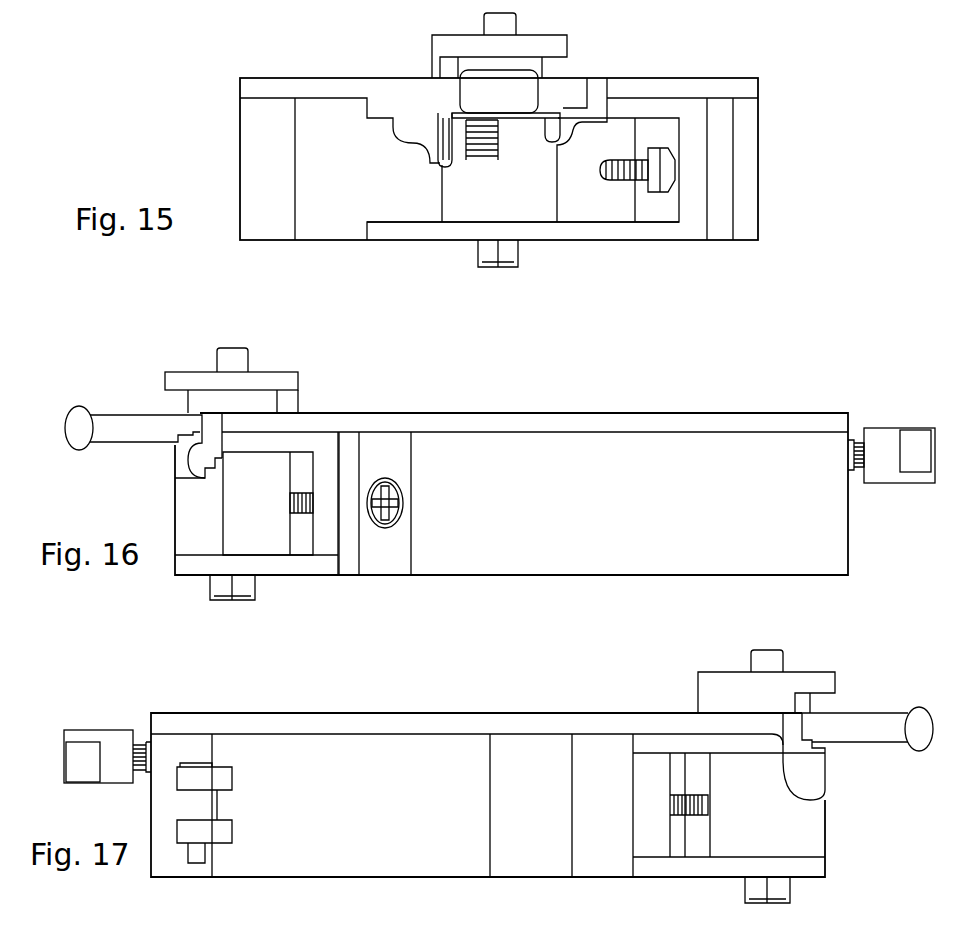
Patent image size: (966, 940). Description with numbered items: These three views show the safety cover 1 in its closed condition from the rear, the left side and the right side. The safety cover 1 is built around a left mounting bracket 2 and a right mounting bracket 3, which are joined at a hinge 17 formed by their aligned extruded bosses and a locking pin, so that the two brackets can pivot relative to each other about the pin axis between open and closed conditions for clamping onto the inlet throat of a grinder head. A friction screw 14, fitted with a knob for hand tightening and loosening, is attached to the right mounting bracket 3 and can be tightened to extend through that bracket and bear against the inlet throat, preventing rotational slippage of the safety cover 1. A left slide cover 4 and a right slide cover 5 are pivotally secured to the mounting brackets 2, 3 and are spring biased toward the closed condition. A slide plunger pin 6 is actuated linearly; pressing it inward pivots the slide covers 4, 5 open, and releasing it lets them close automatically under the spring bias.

In FIG. 15, the safety cover 1 is at (182, 81).
In FIG. 16, the safety cover 1 is at (148, 336).
In FIG. 17, the safety cover 1 is at (134, 658).
In FIG. 15, the left mounting bracket 2 is at (346, 208).
In FIG. 16, the left mounting bracket 2 is at (325, 555).
In FIG. 17, the left mounting bracket 2 is at (425, 825).
In FIG. 15, the right mounting bracket 3 is at (750, 150).
In FIG. 16, the right mounting bracket 3 is at (688, 537).
In FIG. 17, the right mounting bracket 3 is at (170, 857).
In FIG. 15, the left slide cover 4 is at (345, 88).
In FIG. 17, the left slide cover 4 is at (392, 728).
In FIG. 15, the right slide cover 5 is at (683, 92).
In FIG. 16, the right slide cover 5 is at (583, 428).
In FIG. 15, the slide plunger pin 6 is at (500, 95).
In FIG. 16, the slide plunger pin 6 is at (122, 428).
In FIG. 17, the slide plunger pin 6 is at (890, 727).
In FIG. 16, the friction screw 14 is at (884, 447).
In FIG. 17, the friction screw 14 is at (105, 748).
In FIG. 17, the hinge 17 is at (200, 808).